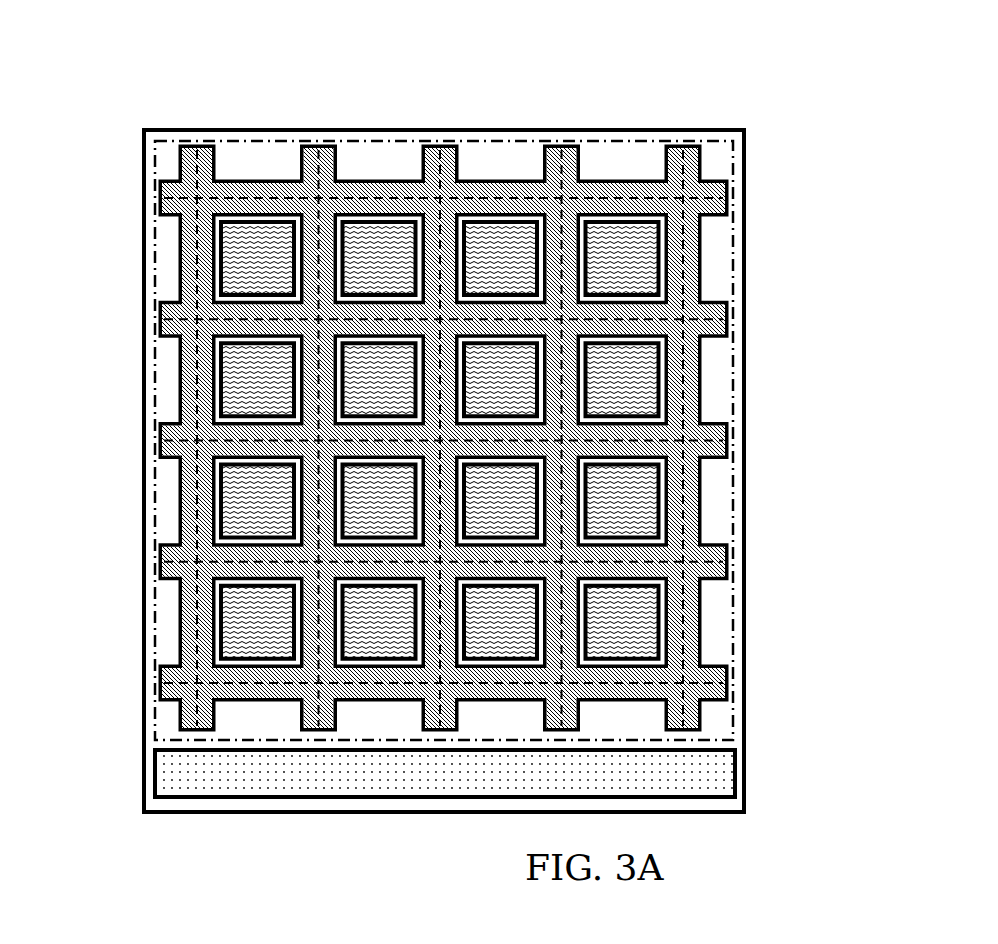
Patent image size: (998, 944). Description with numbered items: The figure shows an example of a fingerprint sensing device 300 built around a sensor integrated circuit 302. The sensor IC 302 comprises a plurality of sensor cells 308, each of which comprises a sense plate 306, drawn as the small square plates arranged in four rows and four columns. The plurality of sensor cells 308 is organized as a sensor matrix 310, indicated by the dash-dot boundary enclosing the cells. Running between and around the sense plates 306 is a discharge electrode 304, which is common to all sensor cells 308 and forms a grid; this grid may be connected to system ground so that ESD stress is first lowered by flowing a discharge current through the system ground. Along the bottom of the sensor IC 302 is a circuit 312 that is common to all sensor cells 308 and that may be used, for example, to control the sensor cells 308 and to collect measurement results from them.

The fingerprint sensing device 300 is at (525, 414).
The sensor integrated circuit 302 is at (745, 150).
The discharge electrode 304 is at (725, 185).
The sense plate 306 is at (633, 383).
The sensor cell 308 is at (687, 502).
The sensor matrix 310 is at (733, 620).
The circuit 312 is at (735, 773).